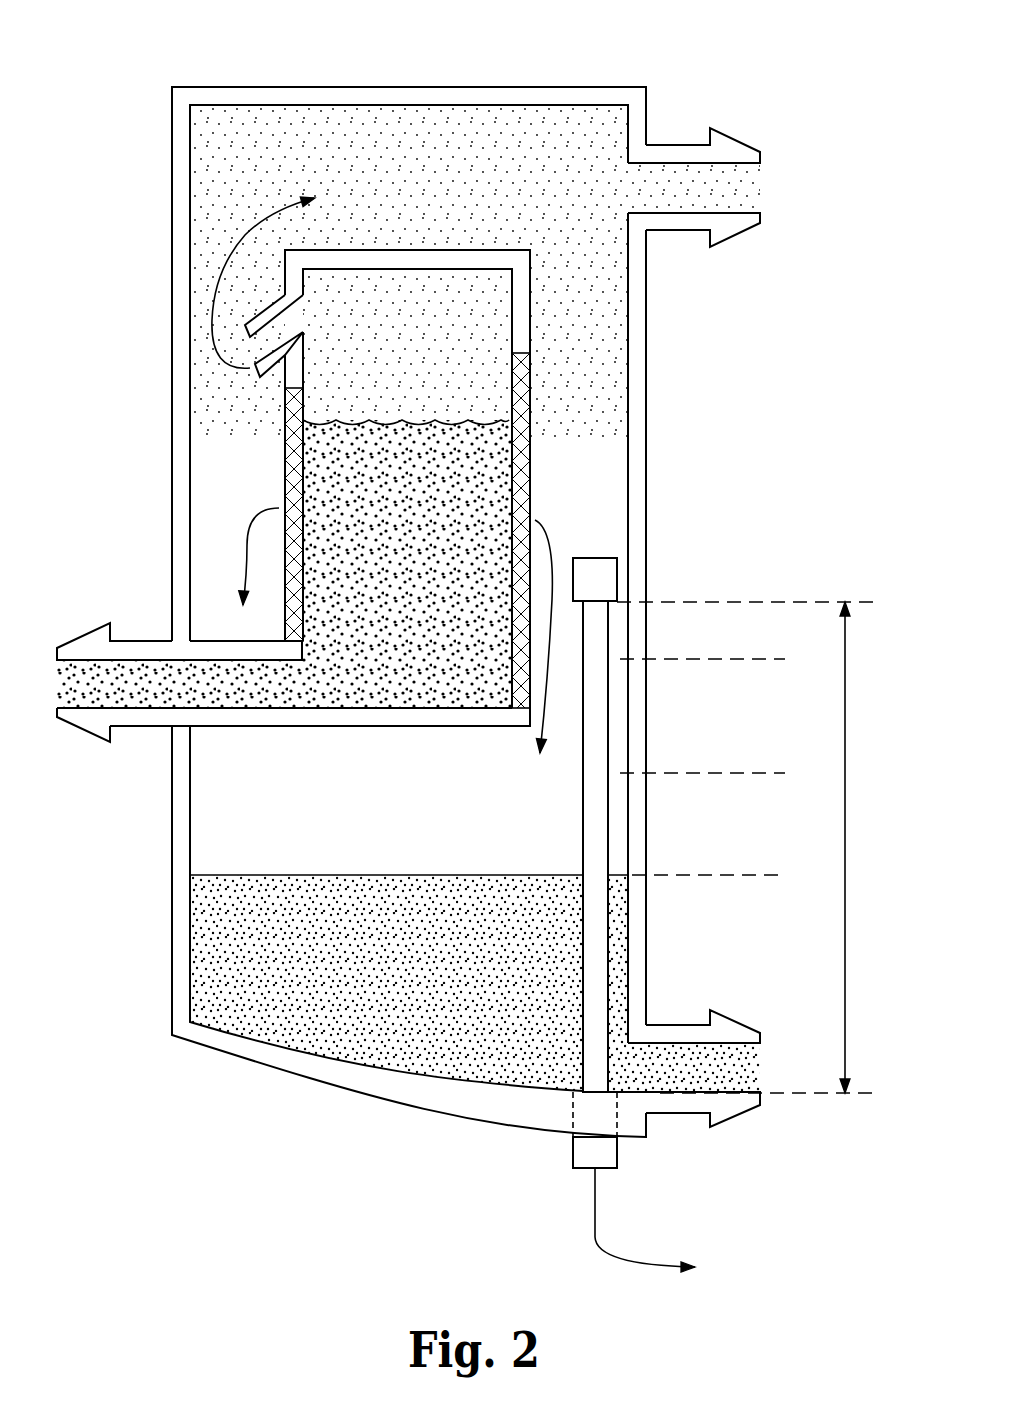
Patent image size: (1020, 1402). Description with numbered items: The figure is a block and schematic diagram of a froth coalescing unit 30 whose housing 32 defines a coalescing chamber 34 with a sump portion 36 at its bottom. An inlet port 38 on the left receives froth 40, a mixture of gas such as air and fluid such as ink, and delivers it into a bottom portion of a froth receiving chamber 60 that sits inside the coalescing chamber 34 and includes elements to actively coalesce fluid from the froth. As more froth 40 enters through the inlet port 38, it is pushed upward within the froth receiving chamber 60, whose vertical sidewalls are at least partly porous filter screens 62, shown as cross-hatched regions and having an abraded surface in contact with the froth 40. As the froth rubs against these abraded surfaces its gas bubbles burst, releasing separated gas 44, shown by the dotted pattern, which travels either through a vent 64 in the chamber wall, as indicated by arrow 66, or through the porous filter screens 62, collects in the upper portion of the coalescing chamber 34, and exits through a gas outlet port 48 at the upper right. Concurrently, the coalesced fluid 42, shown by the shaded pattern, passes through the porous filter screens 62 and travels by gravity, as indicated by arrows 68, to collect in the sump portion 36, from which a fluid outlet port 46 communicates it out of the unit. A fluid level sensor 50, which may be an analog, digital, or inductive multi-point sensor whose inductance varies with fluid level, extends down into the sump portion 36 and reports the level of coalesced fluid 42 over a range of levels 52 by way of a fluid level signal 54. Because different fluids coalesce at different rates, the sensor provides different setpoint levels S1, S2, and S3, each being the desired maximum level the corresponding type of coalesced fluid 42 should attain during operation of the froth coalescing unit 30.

The froth coalescing unit 30 is at (565, 52).
The housing 32 is at (172, 133).
The coalescing chamber 34 is at (217, 496).
The sump portion 36 is at (258, 828).
The inlet port 38 is at (75, 730).
The froth 40 is at (325, 476).
The coalesced fluid 42 is at (230, 970).
The separated gas 44 is at (490, 215).
The fluid outlet port 46 is at (742, 1114).
The gas outlet port 48 is at (743, 232).
The fluid level sensor 50 is at (598, 628).
The range of levels 52 is at (847, 845).
The fluid level signal 54 is at (595, 1237).
The froth receiving chamber 60 is at (458, 482).
The porous filter screens 62 is at (285, 418).
The vent 64 is at (256, 372).
The arrow 66 is at (245, 242).
The arrows 68 is at (247, 574).
The setpoint level S1 is at (722, 876).
The setpoint level S2 is at (716, 774).
The setpoint level S3 is at (716, 660).